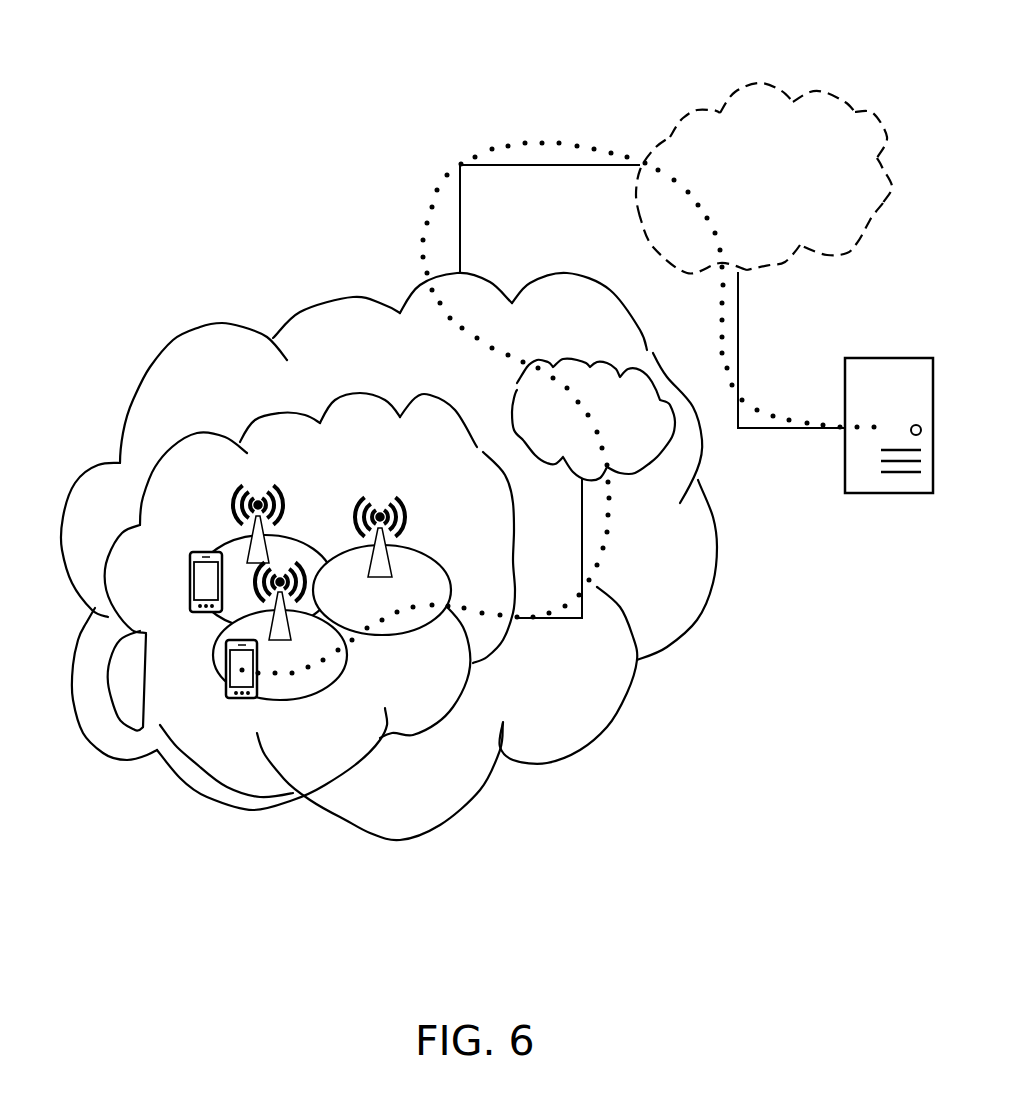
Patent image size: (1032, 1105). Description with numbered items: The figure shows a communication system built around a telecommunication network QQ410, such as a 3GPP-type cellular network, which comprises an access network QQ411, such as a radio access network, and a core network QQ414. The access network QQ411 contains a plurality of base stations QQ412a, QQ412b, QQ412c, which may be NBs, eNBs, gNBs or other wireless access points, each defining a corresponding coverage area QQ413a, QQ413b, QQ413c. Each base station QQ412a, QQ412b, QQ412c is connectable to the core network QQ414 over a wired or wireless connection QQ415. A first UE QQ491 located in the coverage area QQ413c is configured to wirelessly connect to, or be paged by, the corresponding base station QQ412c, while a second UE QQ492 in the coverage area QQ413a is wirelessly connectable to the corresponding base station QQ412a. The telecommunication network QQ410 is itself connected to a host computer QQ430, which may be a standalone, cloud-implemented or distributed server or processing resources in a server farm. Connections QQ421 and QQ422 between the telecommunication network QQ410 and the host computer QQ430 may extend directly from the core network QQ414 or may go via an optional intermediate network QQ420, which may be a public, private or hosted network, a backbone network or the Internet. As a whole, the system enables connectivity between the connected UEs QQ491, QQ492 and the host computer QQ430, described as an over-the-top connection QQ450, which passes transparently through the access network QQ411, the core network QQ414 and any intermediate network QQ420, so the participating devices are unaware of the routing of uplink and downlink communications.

The telecommunication network QQ410 is at (389, 556).
The access network QQ411 is at (310, 595).
The core network QQ414 is at (593, 420).
The intermediate network QQ420 is at (764, 178).
The connection QQ421 is at (548, 165).
The connection QQ422 is at (795, 428).
The host computer QQ430 is at (889, 443).
The wired or wireless connection QQ415 is at (583, 530).
The base station QQ412a is at (330, 690).
The base station QQ412b is at (400, 517).
The base station QQ412c is at (233, 507).
The coverage area QQ413a is at (343, 650).
The coverage area QQ413b is at (513, 618).
The coverage area QQ413c is at (210, 548).
The first UE QQ491 is at (153, 753).
The second UE QQ492 is at (227, 697).
The over-the-top (OTT) connection QQ450 is at (430, 190).